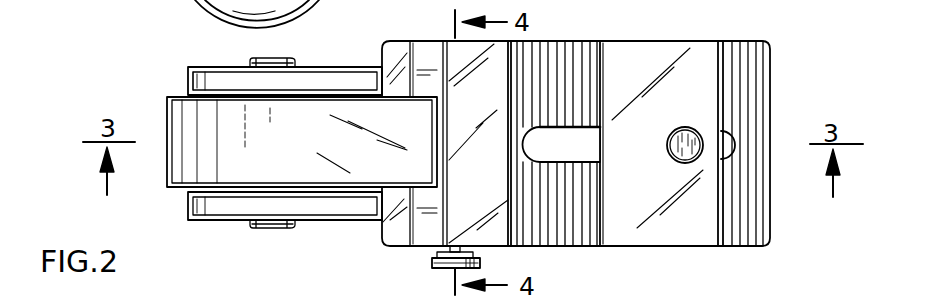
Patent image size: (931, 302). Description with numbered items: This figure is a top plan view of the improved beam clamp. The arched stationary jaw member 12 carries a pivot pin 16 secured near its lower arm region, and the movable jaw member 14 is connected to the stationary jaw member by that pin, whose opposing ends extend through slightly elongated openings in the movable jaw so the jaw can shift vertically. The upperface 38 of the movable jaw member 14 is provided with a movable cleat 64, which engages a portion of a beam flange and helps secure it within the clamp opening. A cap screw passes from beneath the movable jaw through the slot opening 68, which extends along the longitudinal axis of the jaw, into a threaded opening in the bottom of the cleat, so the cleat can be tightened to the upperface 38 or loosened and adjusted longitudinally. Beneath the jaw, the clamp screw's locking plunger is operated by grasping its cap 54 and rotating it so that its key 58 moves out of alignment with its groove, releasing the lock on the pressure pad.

The stationary jaw member 12 is at (180, 113).
The movable jaw member 14 is at (344, 208).
The pivot pin 16 is at (261, 225).
The upperface 38 is at (563, 48).
The cap 54 is at (433, 261).
The key 58 is at (478, 257).
The movable cleat 64 is at (652, 149).
The slot opening 68 is at (551, 143).